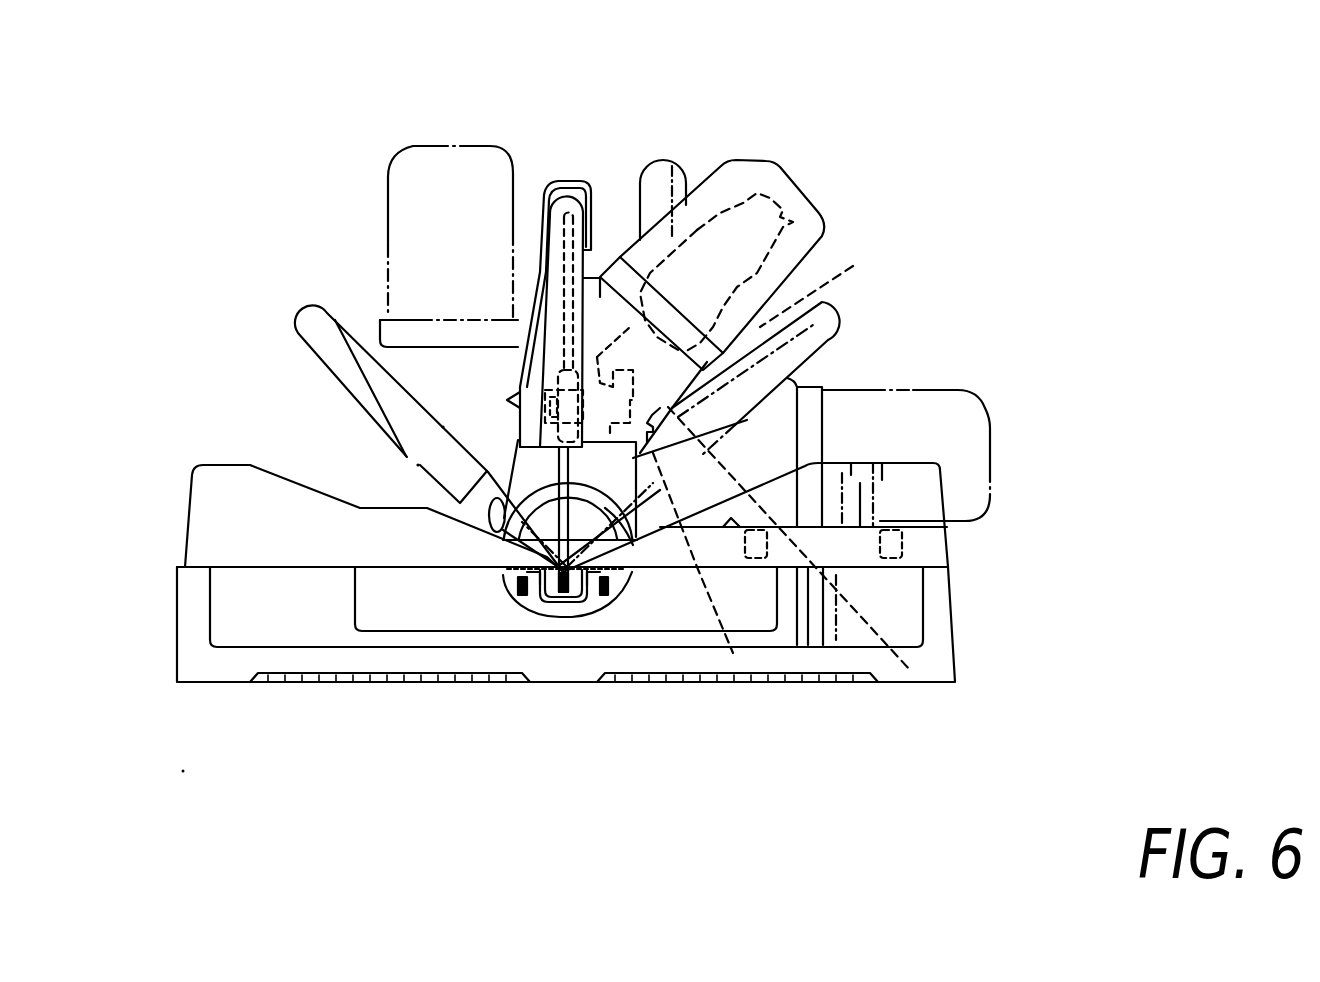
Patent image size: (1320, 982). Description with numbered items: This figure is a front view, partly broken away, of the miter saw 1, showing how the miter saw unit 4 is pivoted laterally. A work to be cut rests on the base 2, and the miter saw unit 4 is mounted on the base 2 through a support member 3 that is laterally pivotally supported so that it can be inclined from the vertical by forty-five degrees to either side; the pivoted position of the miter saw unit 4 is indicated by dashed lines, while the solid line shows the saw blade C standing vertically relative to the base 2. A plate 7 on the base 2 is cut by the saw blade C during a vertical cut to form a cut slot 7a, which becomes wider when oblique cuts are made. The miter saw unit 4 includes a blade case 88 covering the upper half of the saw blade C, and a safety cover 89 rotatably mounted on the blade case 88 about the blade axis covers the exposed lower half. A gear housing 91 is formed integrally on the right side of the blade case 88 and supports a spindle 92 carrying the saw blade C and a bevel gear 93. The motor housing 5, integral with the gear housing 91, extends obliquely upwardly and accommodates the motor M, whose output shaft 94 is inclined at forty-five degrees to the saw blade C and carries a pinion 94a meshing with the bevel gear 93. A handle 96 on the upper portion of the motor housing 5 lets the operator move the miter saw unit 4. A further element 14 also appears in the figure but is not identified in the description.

The miter saw 1 is at (346, 161).
The base 2 is at (195, 631).
The support member 3 is at (490, 473).
The miter saw unit 4 is at (384, 205).
The motor housing 5 is at (437, 147).
The plate 7 is at (510, 582).
The cut slot 7a is at (574, 603).
The body 14 is at (197, 513).
The blade case 88 is at (599, 272).
The safety cover 89 is at (526, 183).
The gear housing 91 is at (612, 262).
The spindle 92 is at (545, 400).
The bevel gear 93 is at (733, 653).
The output shaft 94 is at (831, 275).
The pinion 94a is at (910, 670).
The handle 96 is at (670, 165).
The saw blade C is at (633, 545).
The motor M is at (805, 185).